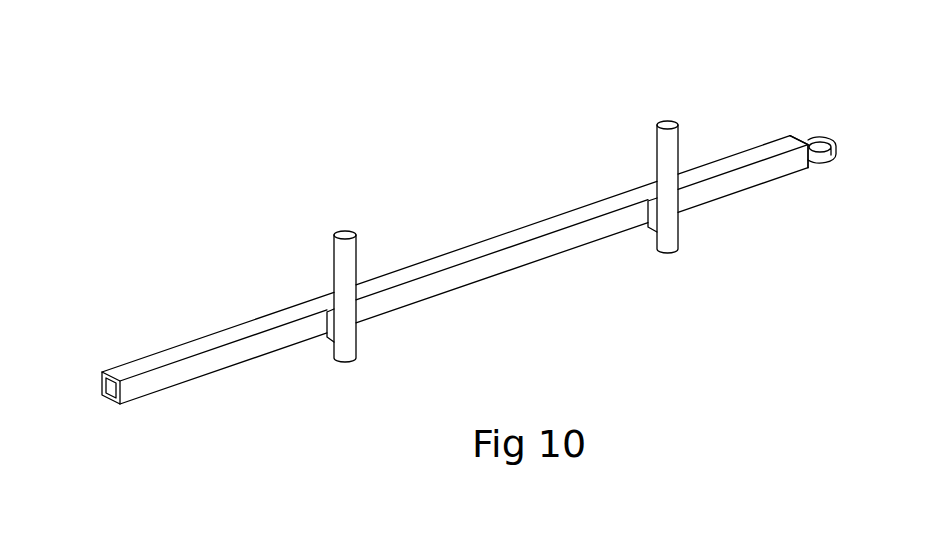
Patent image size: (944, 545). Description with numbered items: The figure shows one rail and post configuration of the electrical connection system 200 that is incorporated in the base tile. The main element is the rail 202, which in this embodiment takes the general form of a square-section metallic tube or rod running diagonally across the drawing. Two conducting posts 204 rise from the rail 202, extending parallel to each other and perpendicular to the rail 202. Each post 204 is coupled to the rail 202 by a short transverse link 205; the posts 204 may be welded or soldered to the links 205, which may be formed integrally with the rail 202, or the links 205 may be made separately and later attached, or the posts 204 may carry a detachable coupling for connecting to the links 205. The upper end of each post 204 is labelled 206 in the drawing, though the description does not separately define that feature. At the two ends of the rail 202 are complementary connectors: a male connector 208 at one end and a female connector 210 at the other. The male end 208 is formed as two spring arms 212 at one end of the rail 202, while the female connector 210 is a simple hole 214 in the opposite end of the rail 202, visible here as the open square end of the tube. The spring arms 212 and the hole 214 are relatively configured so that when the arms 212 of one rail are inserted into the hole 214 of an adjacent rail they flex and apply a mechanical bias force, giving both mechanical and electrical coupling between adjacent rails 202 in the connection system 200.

The electrical connection system 200 is at (268, 260).
The rail 202 is at (228, 360).
The conducting post 204 is at (368, 247).
The transverse link 205 is at (326, 342).
The post upper end 206 is at (358, 220).
The male connector 208 is at (818, 166).
The female connector 210 is at (102, 408).
The spring arm 212 is at (815, 123).
The hole 214 is at (102, 375).